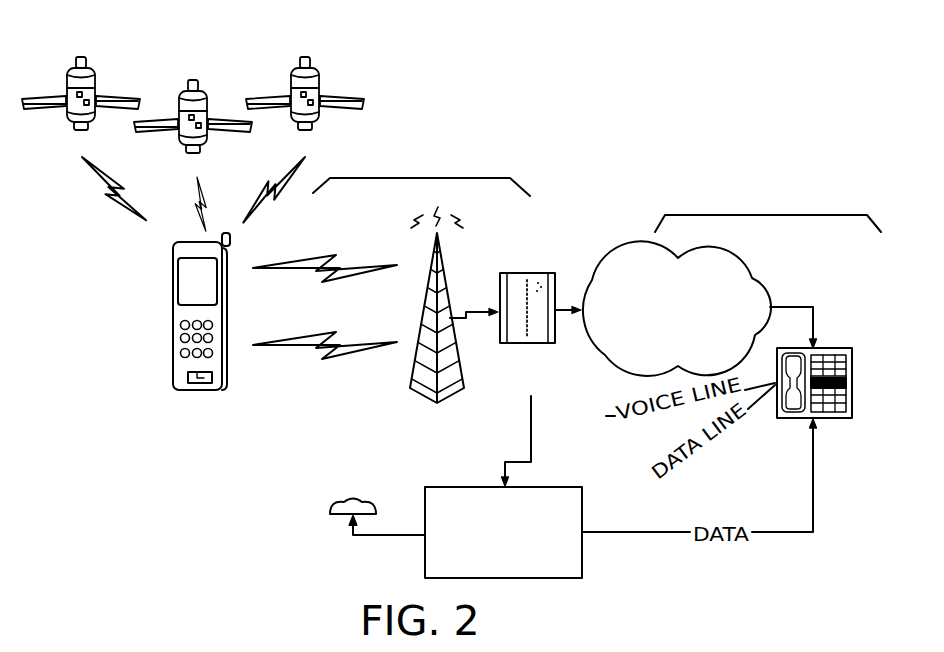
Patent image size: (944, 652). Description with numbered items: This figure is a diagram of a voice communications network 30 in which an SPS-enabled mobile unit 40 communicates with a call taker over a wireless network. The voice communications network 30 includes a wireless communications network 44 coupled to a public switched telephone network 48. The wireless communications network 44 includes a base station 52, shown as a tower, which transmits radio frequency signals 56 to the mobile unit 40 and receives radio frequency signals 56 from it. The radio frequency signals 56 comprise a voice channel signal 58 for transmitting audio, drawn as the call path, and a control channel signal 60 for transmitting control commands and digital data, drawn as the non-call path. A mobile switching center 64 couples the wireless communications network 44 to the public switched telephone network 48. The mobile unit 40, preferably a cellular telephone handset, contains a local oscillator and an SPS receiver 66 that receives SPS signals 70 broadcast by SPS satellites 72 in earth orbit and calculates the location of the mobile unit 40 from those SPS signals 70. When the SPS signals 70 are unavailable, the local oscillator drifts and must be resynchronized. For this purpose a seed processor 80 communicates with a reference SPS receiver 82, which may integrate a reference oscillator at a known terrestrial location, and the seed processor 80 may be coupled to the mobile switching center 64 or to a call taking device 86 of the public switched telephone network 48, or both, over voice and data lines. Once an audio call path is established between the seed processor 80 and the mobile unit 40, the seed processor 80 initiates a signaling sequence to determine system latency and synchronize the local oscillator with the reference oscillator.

The voice communications network 30 is at (632, 106).
The SPS satellites 72 is at (217, 46).
The SPS signals 70 is at (189, 220).
The mobile unit 40 is at (167, 339).
The SPS receiver 66 is at (197, 383).
The control channel signal 60 is at (283, 272).
The voice channel signal 58 is at (283, 350).
The radio frequency signals 56 is at (288, 400).
The base station 52 is at (410, 400).
The wireless communications network 44 is at (407, 178).
The mobile switching center 64 is at (518, 280).
The public switched telephone network 48 is at (770, 214).
The call taking device 86 is at (852, 369).
The seed processor 80 is at (582, 561).
The reference SPS receiver 82 is at (343, 512).